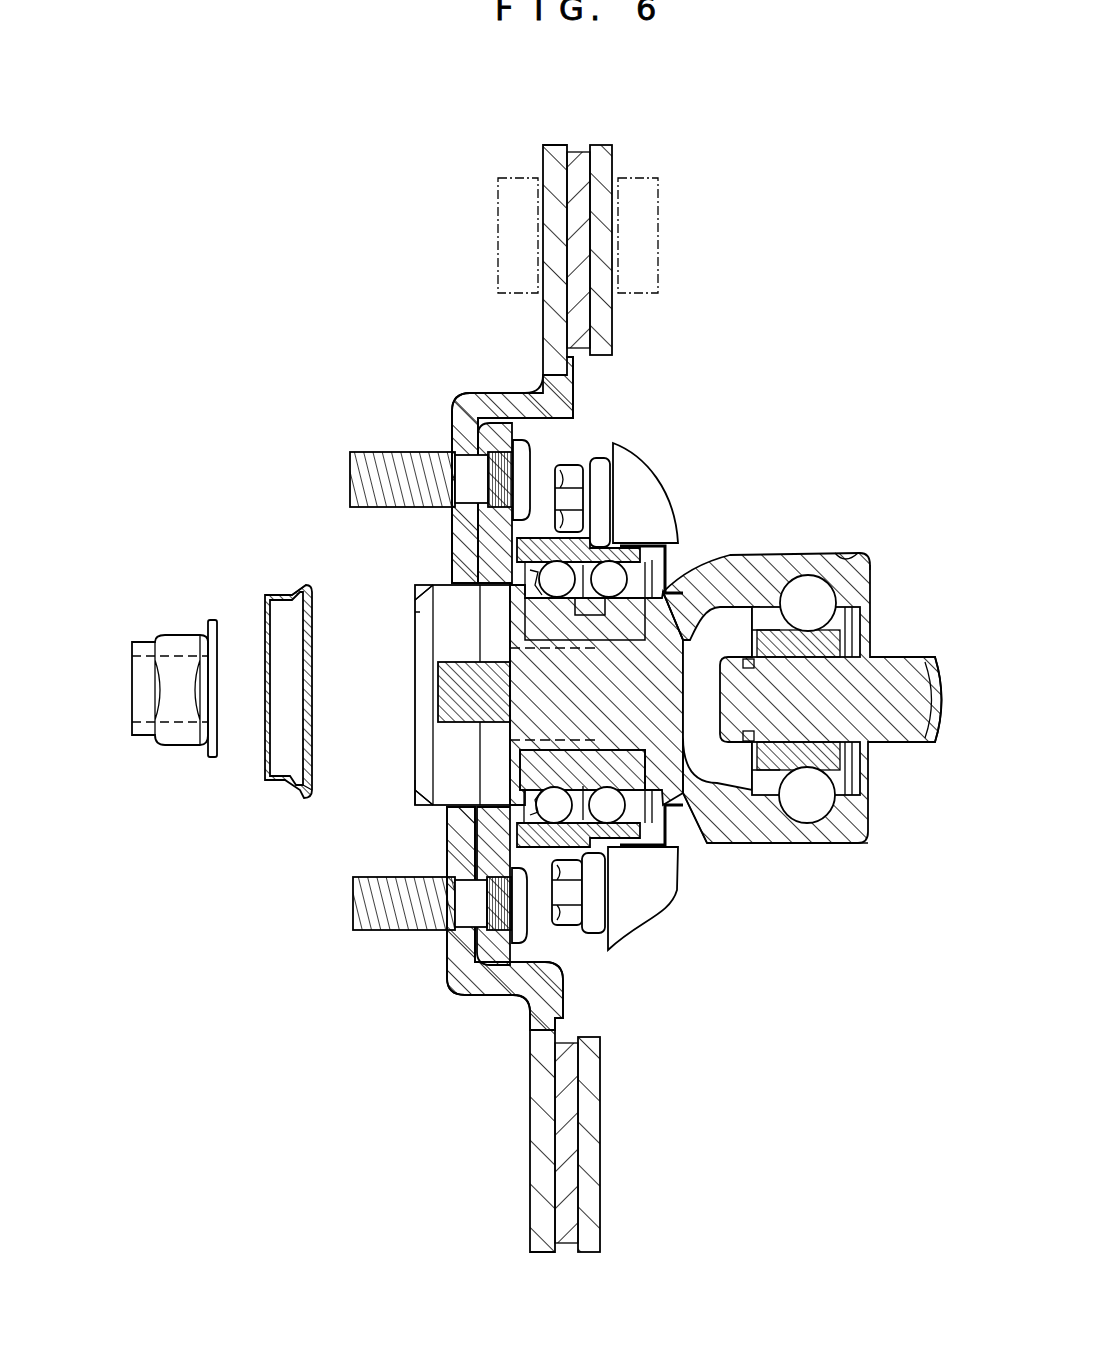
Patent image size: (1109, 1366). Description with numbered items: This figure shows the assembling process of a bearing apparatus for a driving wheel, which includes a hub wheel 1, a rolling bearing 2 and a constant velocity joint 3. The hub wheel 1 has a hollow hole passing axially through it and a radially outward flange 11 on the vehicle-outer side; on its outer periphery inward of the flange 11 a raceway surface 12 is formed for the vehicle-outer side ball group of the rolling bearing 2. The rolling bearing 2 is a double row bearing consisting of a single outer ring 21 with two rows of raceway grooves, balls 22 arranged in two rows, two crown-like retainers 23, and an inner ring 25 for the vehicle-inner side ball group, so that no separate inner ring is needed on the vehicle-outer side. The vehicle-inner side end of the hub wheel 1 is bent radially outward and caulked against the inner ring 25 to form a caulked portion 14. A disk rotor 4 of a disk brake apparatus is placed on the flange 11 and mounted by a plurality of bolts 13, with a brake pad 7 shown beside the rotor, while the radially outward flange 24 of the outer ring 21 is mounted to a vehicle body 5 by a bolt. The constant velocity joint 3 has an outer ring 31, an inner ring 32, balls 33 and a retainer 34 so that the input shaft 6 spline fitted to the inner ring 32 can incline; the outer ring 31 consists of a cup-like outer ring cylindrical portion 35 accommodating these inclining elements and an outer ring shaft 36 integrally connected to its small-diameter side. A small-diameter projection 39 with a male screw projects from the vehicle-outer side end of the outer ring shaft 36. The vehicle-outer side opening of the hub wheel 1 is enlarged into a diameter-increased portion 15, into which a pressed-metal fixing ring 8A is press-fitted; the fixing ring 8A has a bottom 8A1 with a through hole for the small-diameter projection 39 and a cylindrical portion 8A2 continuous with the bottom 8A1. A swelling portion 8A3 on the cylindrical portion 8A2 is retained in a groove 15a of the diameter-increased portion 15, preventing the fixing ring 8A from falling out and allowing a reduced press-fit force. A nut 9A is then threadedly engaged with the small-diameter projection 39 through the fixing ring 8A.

The hub wheel 1 is at (524, 694).
The rolling bearing 2 is at (526, 636).
The constant velocity joint 3 is at (802, 673).
The disk rotor 4 is at (557, 150).
The vehicle body 5 is at (633, 476).
The input shaft 6 is at (930, 722).
The brake pad 7 is at (635, 182).
The fixing ring 8A is at (291, 681).
The bottom 8A1 is at (312, 763).
The cylindrical portion 8A2 is at (285, 592).
The swelling portion 8A3 is at (300, 585).
The nut 9A is at (157, 748).
The flange 11 is at (465, 539).
The raceway surface 12 is at (413, 592).
The bolts 13 is at (402, 453).
The caulked portion 14 is at (673, 592).
The diameter-increased portion 15 is at (417, 753).
The groove 15a is at (413, 632).
The outer ring 21 is at (605, 562).
The balls 22 is at (545, 578).
The crown-like retainers 23 is at (593, 563).
The radially outward flange 24 is at (600, 462).
The inner ring 25 is at (688, 578).
The outer ring 31 is at (850, 556).
The inner ring 32 is at (822, 645).
The balls 33 is at (820, 595).
The retainer 34 is at (843, 600).
The outer ring cylindrical portion 35 is at (807, 845).
The outer ring shaft 36 is at (678, 808).
The small-diameter projection 39 is at (437, 690).